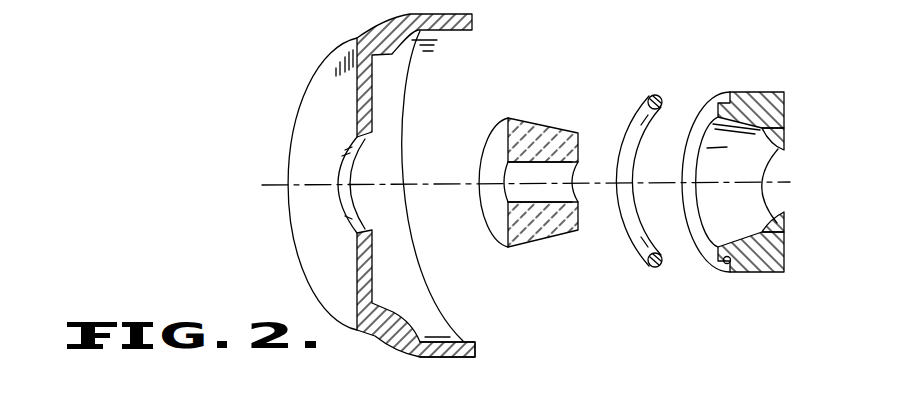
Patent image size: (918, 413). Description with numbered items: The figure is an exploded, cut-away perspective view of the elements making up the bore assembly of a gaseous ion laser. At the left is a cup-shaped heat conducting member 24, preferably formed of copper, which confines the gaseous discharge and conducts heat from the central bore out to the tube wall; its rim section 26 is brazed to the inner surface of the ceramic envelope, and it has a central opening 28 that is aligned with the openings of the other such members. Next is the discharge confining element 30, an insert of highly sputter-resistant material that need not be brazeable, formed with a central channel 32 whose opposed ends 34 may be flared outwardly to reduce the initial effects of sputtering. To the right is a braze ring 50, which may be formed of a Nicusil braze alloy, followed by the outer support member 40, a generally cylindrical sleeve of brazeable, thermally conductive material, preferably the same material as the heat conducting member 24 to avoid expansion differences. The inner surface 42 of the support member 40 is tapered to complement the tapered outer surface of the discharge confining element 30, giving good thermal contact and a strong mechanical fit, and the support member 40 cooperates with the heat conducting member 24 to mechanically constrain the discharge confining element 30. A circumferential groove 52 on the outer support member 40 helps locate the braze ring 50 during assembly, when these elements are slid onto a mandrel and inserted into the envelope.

The heat conducting member 24 is at (304, 113).
The rim section 26 is at (448, 357).
The central opening 28 is at (348, 208).
The discharge confining element 30 is at (537, 247).
The central channel 32 is at (562, 191).
The opposed ends of channel 34 is at (504, 194).
The outer support member 40 is at (747, 93).
The inner surface 42 is at (786, 151).
The braze ring 50 is at (658, 95).
The circumferential groove 52 is at (727, 264).